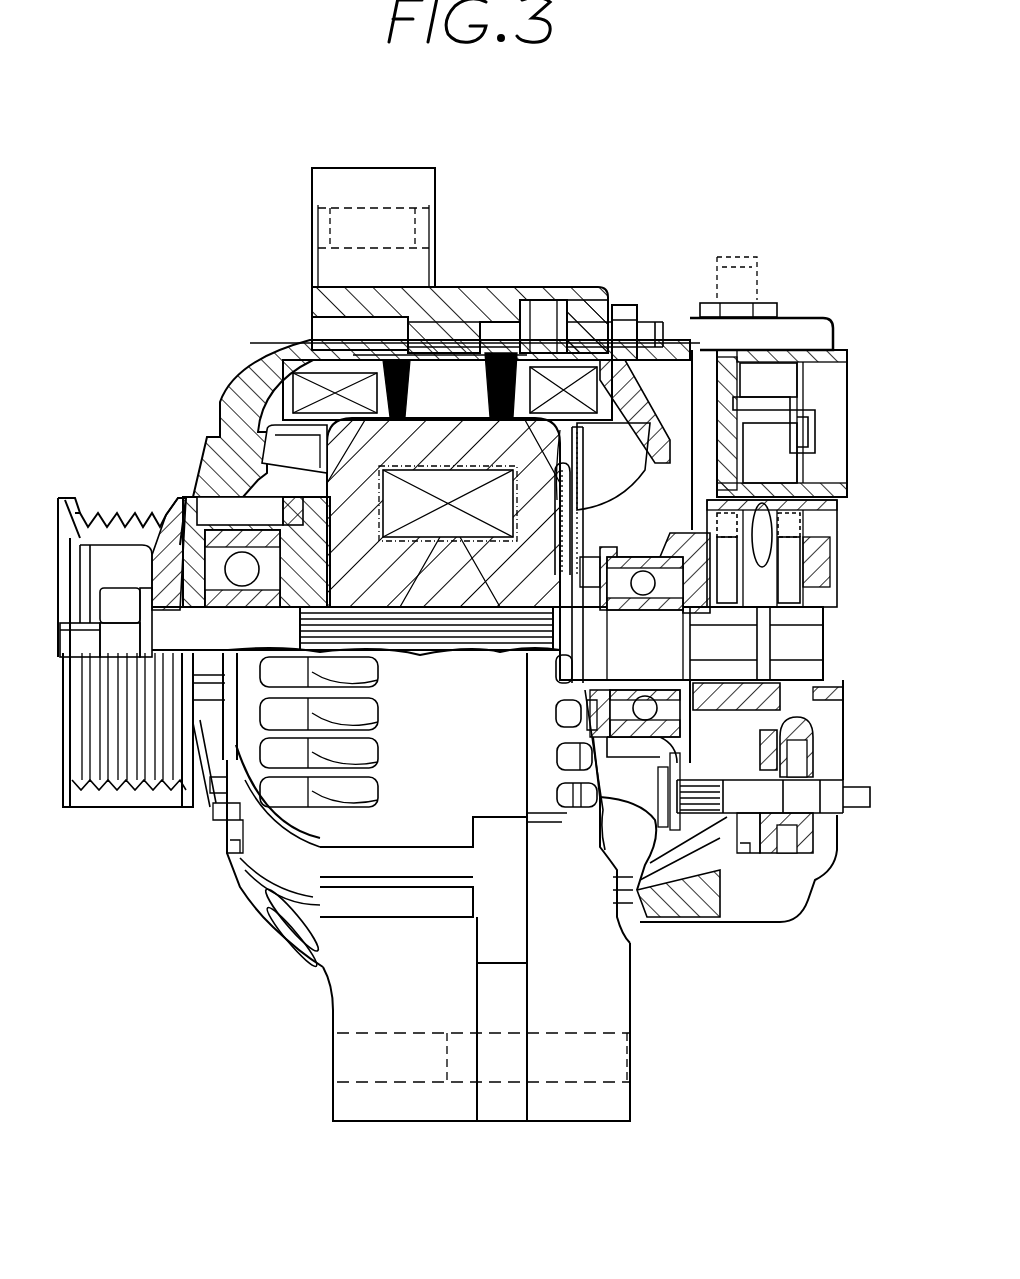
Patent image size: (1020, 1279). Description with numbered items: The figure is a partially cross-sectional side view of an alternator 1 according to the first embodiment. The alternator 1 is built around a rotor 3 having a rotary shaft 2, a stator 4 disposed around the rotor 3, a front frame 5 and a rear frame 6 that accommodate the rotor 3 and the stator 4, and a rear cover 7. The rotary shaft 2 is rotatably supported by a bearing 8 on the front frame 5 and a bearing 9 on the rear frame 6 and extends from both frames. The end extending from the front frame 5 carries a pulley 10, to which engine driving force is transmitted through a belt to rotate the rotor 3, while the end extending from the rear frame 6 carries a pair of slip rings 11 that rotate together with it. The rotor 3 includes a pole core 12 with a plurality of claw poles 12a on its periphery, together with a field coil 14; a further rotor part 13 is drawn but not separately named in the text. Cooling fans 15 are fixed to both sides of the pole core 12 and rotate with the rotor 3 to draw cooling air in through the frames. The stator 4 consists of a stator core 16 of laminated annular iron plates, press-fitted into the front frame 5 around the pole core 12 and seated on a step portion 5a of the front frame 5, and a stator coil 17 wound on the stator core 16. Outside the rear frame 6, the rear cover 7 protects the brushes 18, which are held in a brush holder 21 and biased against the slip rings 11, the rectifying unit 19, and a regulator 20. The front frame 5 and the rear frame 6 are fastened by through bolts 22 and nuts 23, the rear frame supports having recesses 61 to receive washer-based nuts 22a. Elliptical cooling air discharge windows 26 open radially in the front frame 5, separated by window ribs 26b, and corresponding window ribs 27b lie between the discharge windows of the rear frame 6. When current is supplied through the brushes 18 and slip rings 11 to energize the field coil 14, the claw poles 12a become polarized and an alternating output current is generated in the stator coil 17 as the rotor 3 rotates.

The alternator 1 is at (573, 205).
The rotary shaft 2 is at (173, 605).
The rotor 3 is at (351, 534).
The stator 4 is at (440, 330).
The front frame 5 is at (240, 897).
The step portion 5a is at (398, 330).
The rear frame 6 is at (633, 963).
The rear cover 7 is at (818, 893).
The bearing 8 is at (225, 612).
The bearing 9 is at (632, 565).
The pulley 10 is at (108, 790).
The slip rings 11 is at (800, 655).
The pole core 12 is at (347, 487).
The claw poles 12a is at (497, 353).
The rotor core 13 is at (423, 577).
The field coil 14 is at (470, 523).
The cooling fans 15 is at (290, 430).
The stator core 16 is at (453, 370).
The stator coil 17 is at (305, 385).
The brushes 18 is at (815, 575).
The rectifying unit 19 is at (820, 845).
The voltage regulator 20 is at (822, 415).
The brush holder 21 is at (830, 532).
The through bolts 22 is at (437, 350).
The washer-based nuts 22a is at (540, 318).
The nuts 23 is at (620, 318).
The cooling air discharge windows 26 is at (370, 794).
The window ribs 26b is at (337, 777).
The window ribs 27b is at (575, 775).
The recesses 61 is at (580, 300).